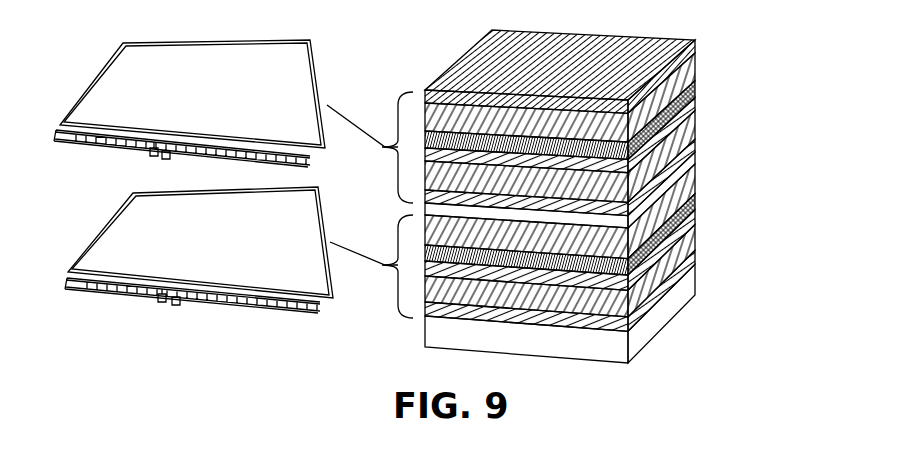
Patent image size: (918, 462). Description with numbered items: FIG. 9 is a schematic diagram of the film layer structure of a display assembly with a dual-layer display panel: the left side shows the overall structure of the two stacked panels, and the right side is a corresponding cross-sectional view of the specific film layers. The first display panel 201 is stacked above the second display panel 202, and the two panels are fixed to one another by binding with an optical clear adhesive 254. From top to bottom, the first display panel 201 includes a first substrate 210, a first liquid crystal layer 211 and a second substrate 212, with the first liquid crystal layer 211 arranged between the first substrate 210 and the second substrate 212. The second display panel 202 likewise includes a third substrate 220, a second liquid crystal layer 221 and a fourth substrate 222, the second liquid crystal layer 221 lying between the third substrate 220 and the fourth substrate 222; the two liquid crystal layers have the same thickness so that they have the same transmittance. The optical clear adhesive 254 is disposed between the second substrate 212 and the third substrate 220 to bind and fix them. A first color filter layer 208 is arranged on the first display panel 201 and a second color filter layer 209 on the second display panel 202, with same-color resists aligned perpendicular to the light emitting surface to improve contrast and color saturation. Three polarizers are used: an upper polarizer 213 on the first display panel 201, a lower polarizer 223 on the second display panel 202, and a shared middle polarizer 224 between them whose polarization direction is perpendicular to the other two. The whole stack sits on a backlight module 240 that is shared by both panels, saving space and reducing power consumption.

The first display panel 201 is at (310, 45).
The second display panel 202 is at (318, 202).
The upper polarizer 213 is at (697, 47).
The first substrate 210 is at (695, 77).
The first color filter layer 208 is at (695, 103).
The first liquid crystal layer 211 is at (695, 127).
The second substrate 212 is at (697, 147).
The middle polarizer 224 is at (697, 158).
The optical clear adhesive 254 is at (697, 180).
The third substrate 220 is at (697, 202).
The second color filter layer 209 is at (697, 220).
The second liquid crystal layer 221 is at (697, 240).
The fourth substrate 222 is at (697, 262).
The lower polarizer 223 is at (697, 277).
The backlight module 240 is at (657, 328).